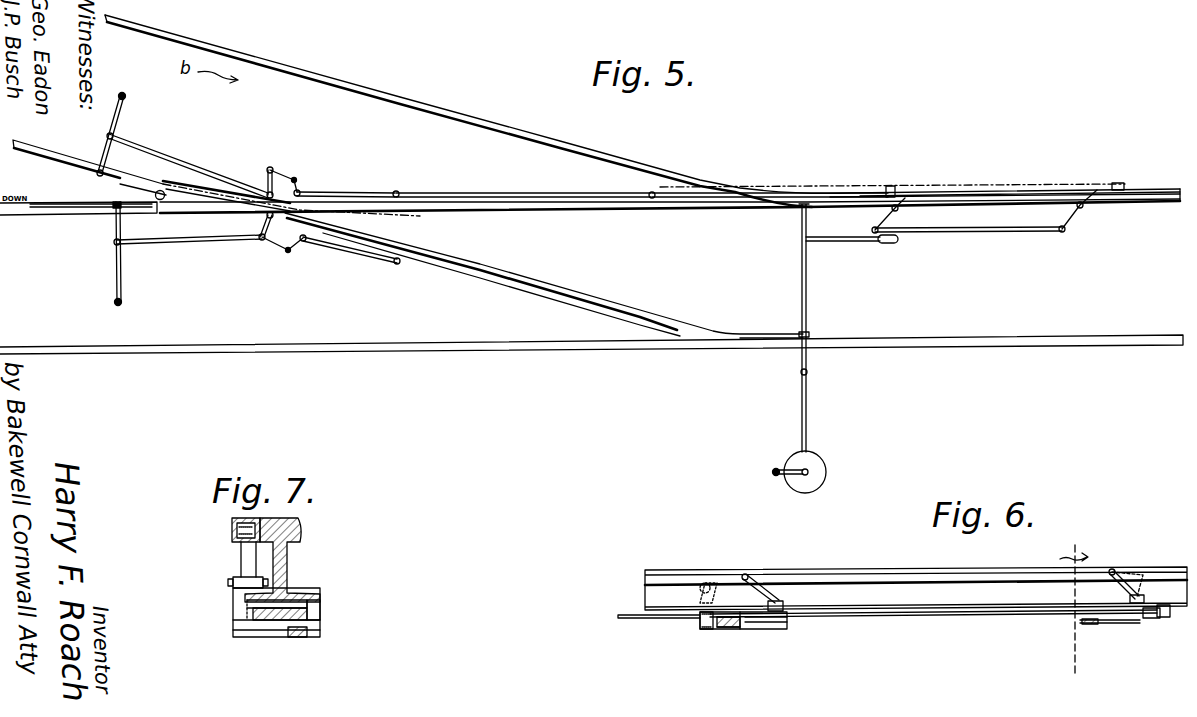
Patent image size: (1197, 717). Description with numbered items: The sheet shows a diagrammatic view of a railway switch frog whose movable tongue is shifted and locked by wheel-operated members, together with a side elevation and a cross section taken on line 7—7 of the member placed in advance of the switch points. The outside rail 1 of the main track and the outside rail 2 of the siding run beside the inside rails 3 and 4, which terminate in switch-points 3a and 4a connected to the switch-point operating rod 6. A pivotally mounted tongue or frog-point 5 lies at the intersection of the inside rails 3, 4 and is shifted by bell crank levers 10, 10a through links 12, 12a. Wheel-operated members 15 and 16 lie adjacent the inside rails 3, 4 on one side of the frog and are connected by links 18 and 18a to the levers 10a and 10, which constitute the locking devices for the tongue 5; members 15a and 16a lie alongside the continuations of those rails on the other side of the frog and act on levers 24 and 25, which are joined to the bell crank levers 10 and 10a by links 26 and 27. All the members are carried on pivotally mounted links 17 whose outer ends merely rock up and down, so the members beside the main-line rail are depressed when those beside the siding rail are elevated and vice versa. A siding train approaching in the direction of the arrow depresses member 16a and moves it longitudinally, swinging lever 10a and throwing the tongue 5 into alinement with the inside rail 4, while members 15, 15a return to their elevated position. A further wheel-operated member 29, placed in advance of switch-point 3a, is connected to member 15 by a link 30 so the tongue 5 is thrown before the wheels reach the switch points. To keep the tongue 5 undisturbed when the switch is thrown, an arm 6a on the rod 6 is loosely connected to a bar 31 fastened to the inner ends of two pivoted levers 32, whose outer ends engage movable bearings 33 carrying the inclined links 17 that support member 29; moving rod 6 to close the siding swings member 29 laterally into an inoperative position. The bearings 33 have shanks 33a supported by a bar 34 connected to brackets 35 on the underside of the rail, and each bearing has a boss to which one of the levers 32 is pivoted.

In FIG. 5, the outside rail of main track 1 is at (348, 345).
In FIG. 5, the outside rail of side track 2 is at (339, 88).
In FIG. 6, the outside rail of side track 2 is at (850, 569).
In FIG. 7, the outside rail of side track 2 is at (300, 523).
In FIG. 5, the inside rail of main track 3 is at (656, 209).
In FIG. 5, the switch-point 3a is at (765, 209).
In FIG. 5, the inside rail of siding 4 is at (604, 304).
In FIG. 5, the switch-point 4a is at (770, 334).
In FIG. 5, the movable tongue or frog-point 5 is at (288, 198).
In FIG. 5, the switch-point operating rod 6 is at (807, 400).
In FIG. 5, the arm on switch-point operating rod 6a is at (858, 246).
In FIG. 6, the section line 7— 7 is at (1074, 612).
In FIG. 5, the bell crank lever 10 is at (292, 253).
In FIG. 5, the bell crank lever 10a is at (298, 181).
In FIG. 5, the link 12 is at (258, 228).
In FIG. 5, the link 12a is at (264, 172).
In FIG. 5, the wheel-operated member 15 is at (533, 193).
In FIG. 5, the wheel-operated member 15a is at (76, 206).
In FIG. 5, the wheel-operated member 16 is at (512, 288).
In FIG. 5, the wheel-operated member 16a is at (28, 167).
In FIG. 6, the oscillating links 17 is at (770, 590).
In FIG. 7, the oscillating links 17 is at (243, 563).
In FIG. 5, the link 18 is at (381, 191).
In FIG. 5, the link 18a is at (356, 253).
In FIG. 5, the lever 24 is at (114, 277).
In FIG. 5, the lever 25 is at (114, 133).
In FIG. 5, the link 26 is at (213, 246).
In FIG. 5, the link 27 is at (202, 172).
In FIG. 5, the wheel-operated member 29 is at (1116, 183).
In FIG. 6, the wheel-operated member 29 is at (717, 577).
In FIG. 7, the wheel-operated member 29 is at (232, 531).
In FIG. 5, the link 30 is at (838, 190).
In FIG. 6, the link 30 is at (660, 622).
In FIG. 5, the bar 31 is at (1003, 234).
In FIG. 5, the pivotally mounted levers 32 is at (871, 226).
In FIG. 6, the pivotally mounted levers 32 is at (778, 633).
In FIG. 7, the pivotally mounted levers 32 is at (292, 637).
In FIG. 6, the movable bearings 33 is at (1147, 622).
In FIG. 7, the movable bearings 33 is at (233, 619).
In FIG. 6, the shanks or arms 33a is at (790, 626).
In FIG. 7, the shanks or arms 33a is at (295, 605).
In FIG. 6, the bar 34 is at (955, 619).
In FIG. 7, the bar 34 is at (266, 623).
In FIG. 6, the brackets 35 is at (740, 633).
In FIG. 7, the brackets 35 is at (322, 614).